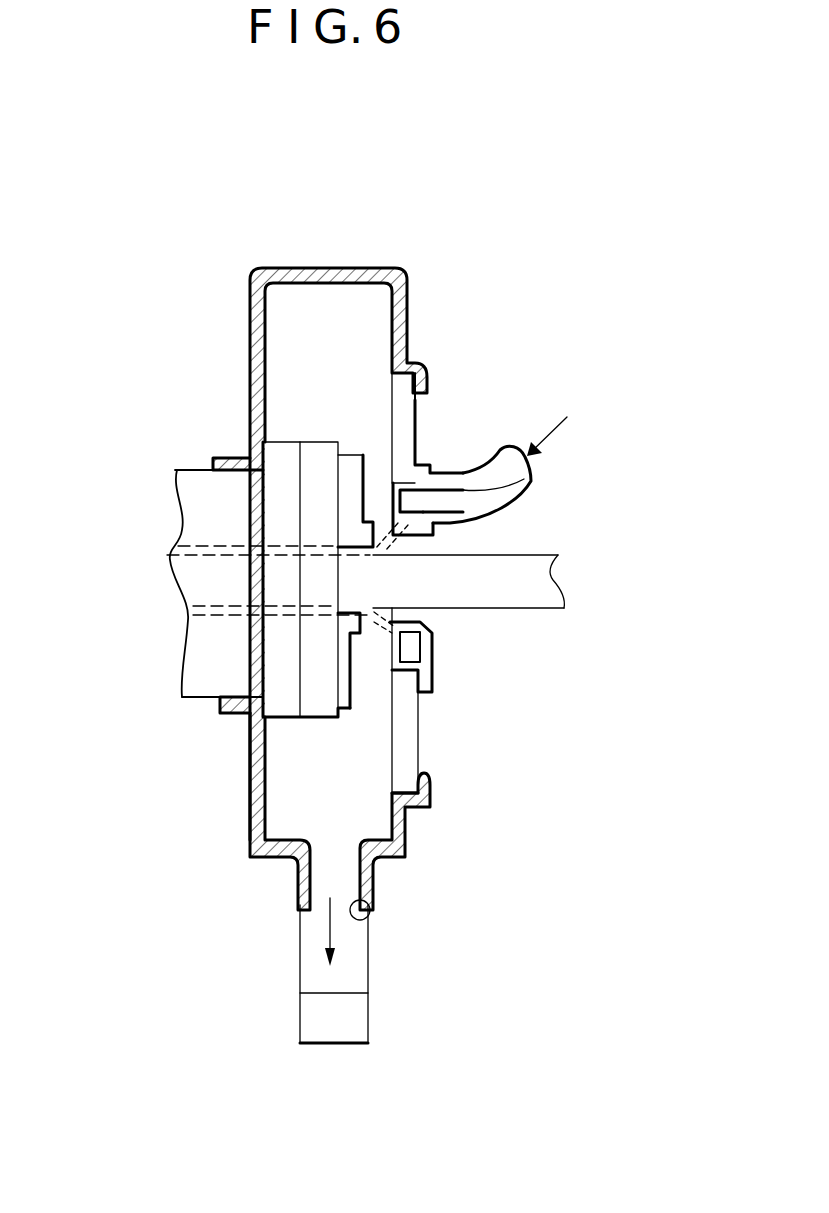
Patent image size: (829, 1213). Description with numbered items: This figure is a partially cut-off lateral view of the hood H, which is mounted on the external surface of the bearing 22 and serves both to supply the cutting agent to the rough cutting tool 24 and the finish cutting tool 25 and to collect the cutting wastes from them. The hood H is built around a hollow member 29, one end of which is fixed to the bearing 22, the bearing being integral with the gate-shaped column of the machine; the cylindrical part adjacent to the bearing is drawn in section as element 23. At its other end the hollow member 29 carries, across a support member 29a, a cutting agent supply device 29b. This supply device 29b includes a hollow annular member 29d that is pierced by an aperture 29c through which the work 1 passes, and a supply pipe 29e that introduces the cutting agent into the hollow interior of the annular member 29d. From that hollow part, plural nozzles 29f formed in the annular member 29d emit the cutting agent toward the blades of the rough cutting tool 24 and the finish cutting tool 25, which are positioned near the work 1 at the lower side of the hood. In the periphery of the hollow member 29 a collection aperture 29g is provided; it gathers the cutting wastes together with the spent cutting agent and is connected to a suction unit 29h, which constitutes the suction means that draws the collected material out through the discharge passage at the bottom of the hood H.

The work 1 is at (562, 555).
The bearing 22 is at (200, 487).
The bearing hub 23 is at (315, 708).
The rough cutting tool 24 is at (353, 643).
The finish cutting tool 25 is at (373, 531).
The hollow member 29 is at (330, 271).
The support member 29a is at (407, 728).
The cutting agent supply device 29b is at (541, 483).
The aperture 29c is at (433, 537).
The hollow annular member 29d is at (433, 678).
The supply pipe 29e is at (477, 473).
The nozzles 29f is at (403, 617).
The collection aperture 29g is at (372, 928).
The suction unit 29h is at (353, 1020).
The hood H is at (165, 318).